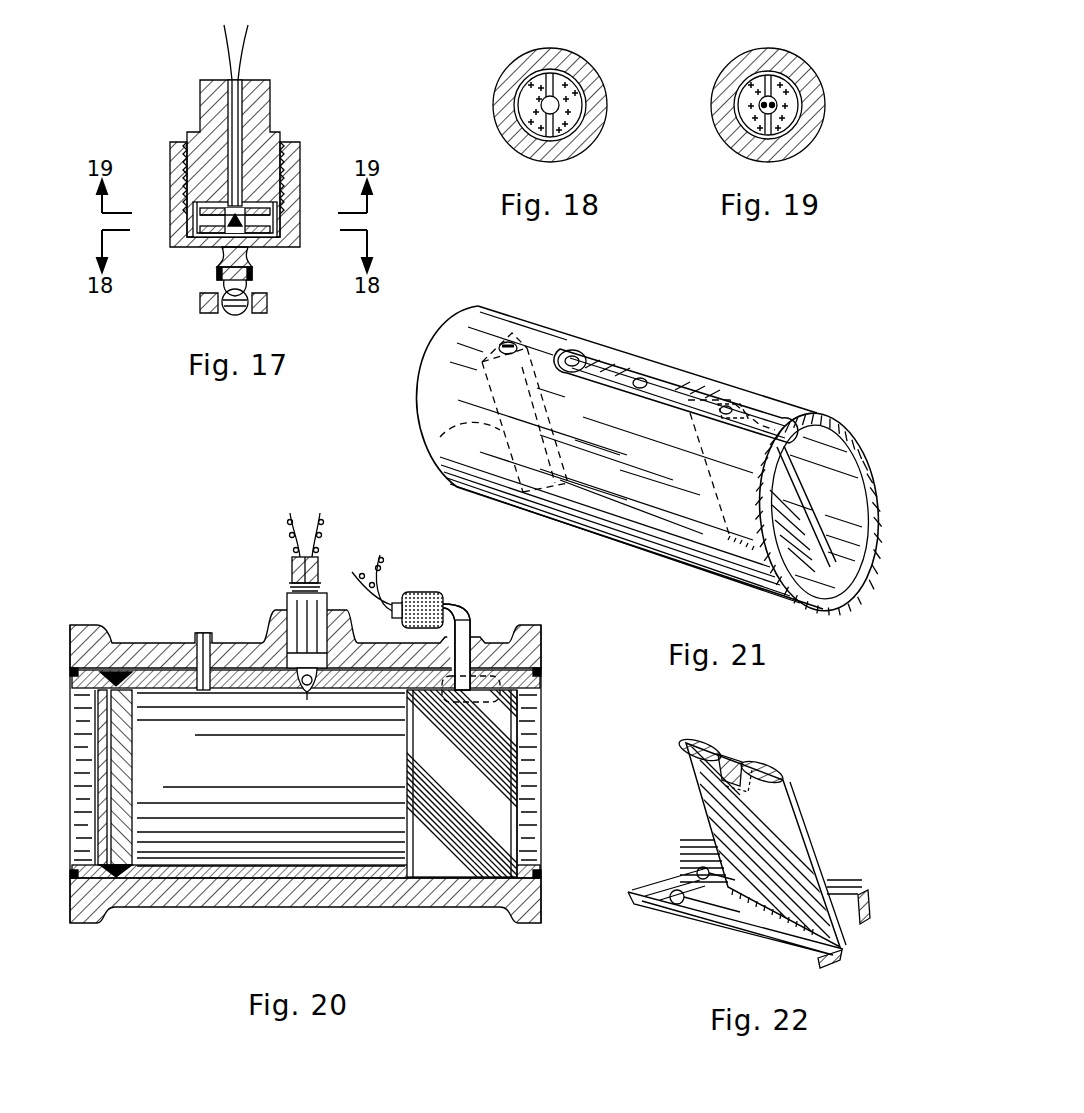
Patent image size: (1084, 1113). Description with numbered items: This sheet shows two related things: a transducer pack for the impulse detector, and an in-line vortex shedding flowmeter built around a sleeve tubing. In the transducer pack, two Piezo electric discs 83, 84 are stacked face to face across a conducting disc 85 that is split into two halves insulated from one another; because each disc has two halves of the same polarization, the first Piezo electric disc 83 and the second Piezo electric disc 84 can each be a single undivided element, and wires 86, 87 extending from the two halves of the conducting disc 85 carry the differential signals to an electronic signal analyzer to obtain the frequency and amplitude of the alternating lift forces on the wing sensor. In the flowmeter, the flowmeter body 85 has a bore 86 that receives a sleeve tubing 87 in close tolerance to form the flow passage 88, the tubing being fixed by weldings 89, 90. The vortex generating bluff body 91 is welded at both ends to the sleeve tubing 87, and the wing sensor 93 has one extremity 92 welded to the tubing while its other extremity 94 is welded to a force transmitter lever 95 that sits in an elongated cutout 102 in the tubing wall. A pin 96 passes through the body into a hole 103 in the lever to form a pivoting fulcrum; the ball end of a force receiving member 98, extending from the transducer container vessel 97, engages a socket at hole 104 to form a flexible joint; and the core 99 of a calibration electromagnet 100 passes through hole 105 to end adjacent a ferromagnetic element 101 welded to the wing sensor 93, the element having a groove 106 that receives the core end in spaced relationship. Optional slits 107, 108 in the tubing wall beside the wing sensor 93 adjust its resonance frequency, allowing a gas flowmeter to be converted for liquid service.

In FIG. 17, the first Piezo electric disc 83 is at (296, 245).
In FIG. 18, the first Piezo electric disc 83 is at (525, 80).
In FIG. 17, the second Piezo electric disc 84 is at (262, 212).
In FIG. 19, the second Piezo electric disc 84 is at (795, 72).
In FIG. 17, the conducting disc / flowmeter body 85 is at (192, 222).
In FIG. 20, the conducting disc / flowmeter body 85 is at (160, 890).
In FIG. 17, the wire / bore 86 is at (228, 46).
In FIG. 20, the wire / bore 86 is at (235, 872).
In FIG. 17, the wire / sleeve tubing 87 is at (244, 48).
In FIG. 21, the wire / sleeve tubing 87 is at (655, 525).
In FIG. 20, the wire / sleeve tubing 87 is at (312, 872).
In FIG. 22, the wire / sleeve tubing 87 is at (688, 864).
In FIG. 20, the flow passage 88 is at (340, 825).
In FIG. 20, the welding 89 is at (74, 882).
In FIG. 20, the welding 90 is at (543, 882).
In FIG. 21, the vortex generating bluff body 91 is at (442, 437).
In FIG. 20, the vortex generating bluff body 91 is at (115, 778).
In FIG. 20, the extremity of the wing sensor 92 is at (448, 872).
In FIG. 21, the wing sensor 93 is at (790, 497).
In FIG. 20, the wing sensor 93 is at (468, 753).
In FIG. 22, the wing sensor 93 is at (760, 832).
In FIG. 20, the extremity of the wing sensor 94 is at (497, 688).
In FIG. 21, the force transmitter lever 95 is at (588, 355).
In FIG. 20, the force transmitter lever 95 is at (185, 688).
In FIG. 20, the pin 96 is at (204, 660).
In FIG. 20, the transducer container vessel 97 is at (300, 622).
In FIG. 20, the force receiving member 98 is at (262, 688).
In FIG. 20, the core 99 is at (465, 650).
In FIG. 20, the calibration electromagnet 100 is at (422, 610).
In FIG. 20, the ferromagnetic element 101 is at (515, 720).
In FIG. 22, the ferromagnetic element 101 is at (738, 748).
In FIG. 21, the elongated cutout 102 is at (680, 400).
In FIG. 21, the hole 103 is at (558, 352).
In FIG. 21, the hole 104 is at (645, 378).
In FIG. 21, the hole 105 is at (730, 406).
In FIG. 22, the groove 106 is at (722, 785).
In FIG. 22, the slit 107 is at (868, 915).
In FIG. 22, the slit 108 is at (822, 960).